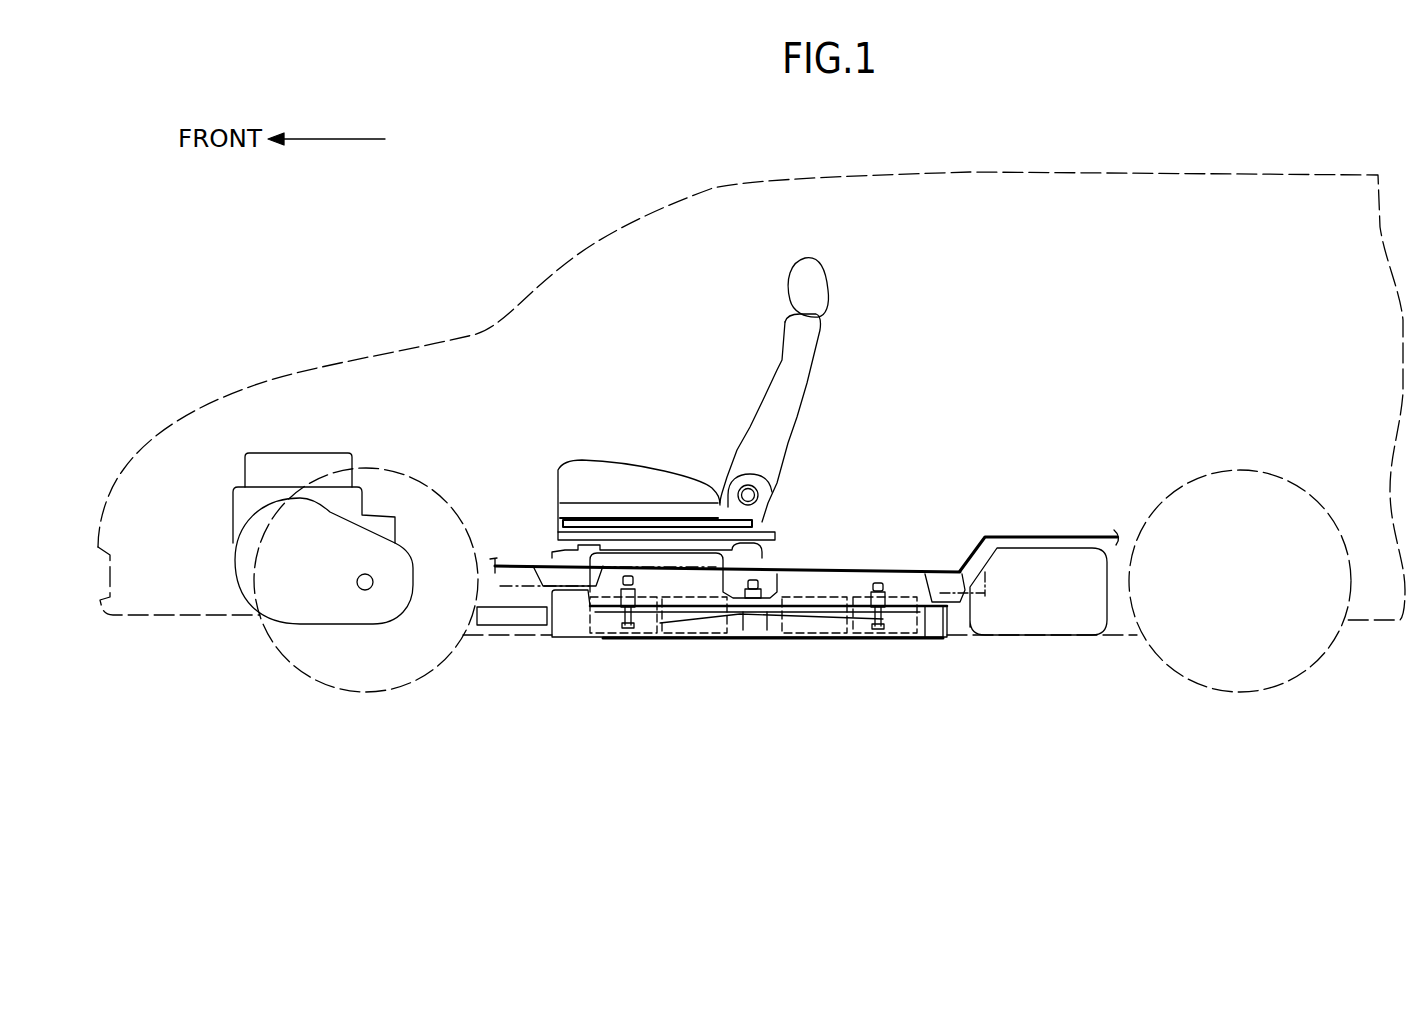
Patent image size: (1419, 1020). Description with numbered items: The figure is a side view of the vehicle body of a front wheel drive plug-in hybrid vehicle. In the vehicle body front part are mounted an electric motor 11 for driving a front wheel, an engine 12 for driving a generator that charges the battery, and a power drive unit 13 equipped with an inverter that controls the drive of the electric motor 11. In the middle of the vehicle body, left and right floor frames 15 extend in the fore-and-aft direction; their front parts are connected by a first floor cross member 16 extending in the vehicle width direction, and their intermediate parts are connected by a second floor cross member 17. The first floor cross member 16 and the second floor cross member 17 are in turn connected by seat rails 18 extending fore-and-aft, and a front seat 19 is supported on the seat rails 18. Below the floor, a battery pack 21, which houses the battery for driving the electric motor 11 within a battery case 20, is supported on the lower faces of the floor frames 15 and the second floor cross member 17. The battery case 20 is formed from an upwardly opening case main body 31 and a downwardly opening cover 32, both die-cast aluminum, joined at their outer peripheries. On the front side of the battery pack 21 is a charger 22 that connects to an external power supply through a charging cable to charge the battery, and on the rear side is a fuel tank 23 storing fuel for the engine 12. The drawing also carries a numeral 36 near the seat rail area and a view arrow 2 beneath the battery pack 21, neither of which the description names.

The electric motor 11 is at (247, 570).
The engine 12 is at (242, 510).
The power drive unit 13 is at (253, 467).
The floor frame 15 is at (523, 584).
The first floor cross member 16 is at (535, 576).
The second floor cross member 17 is at (777, 580).
The seat rail 18 is at (615, 545).
The front seat 19 is at (732, 422).
The battery case 20 is at (931, 713).
The battery pack 21 is at (697, 647).
The charger 22 is at (505, 620).
The fuel tank 23 is at (1037, 614).
The case main body 31 is at (815, 640).
The cover 32 is at (925, 640).
The seat rail 36 is at (860, 570).
The view direction arrow for FIG. 2 is at (780, 740).